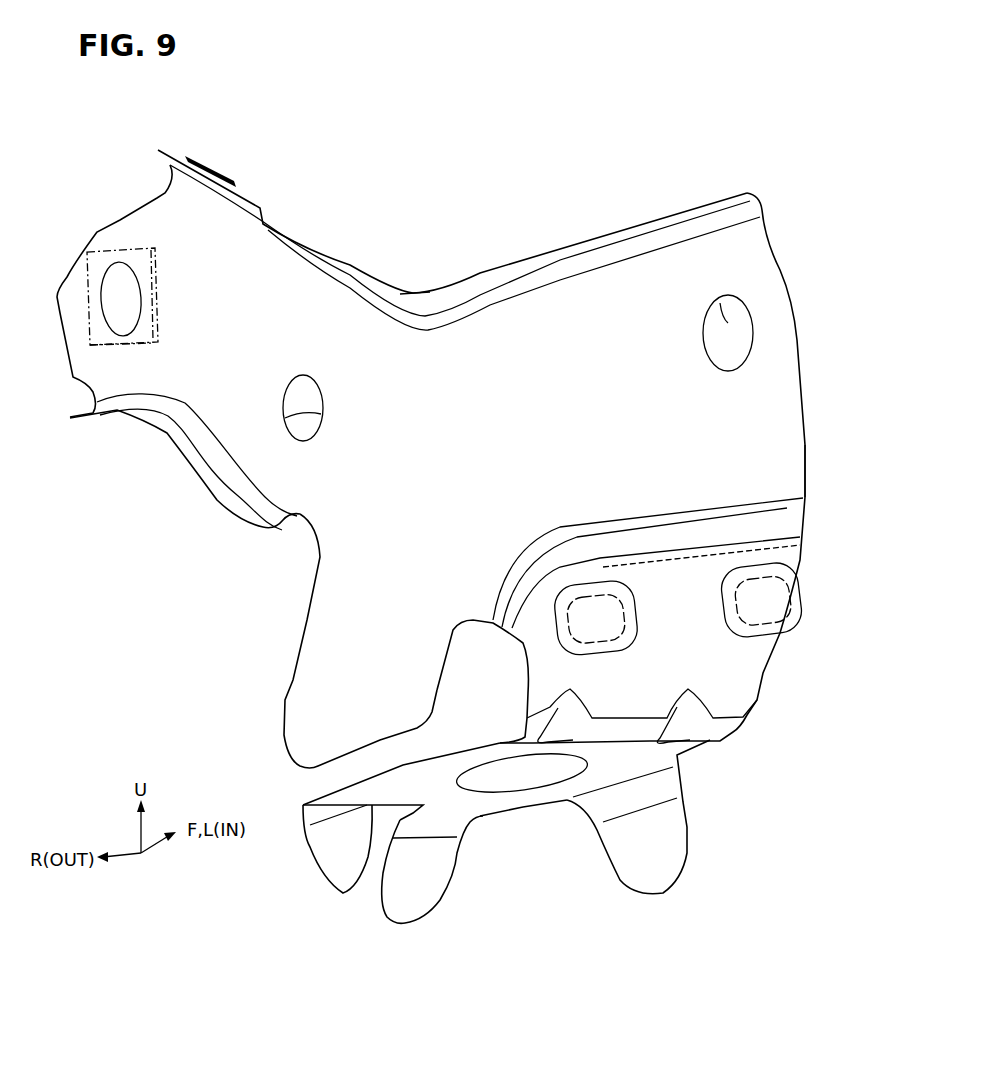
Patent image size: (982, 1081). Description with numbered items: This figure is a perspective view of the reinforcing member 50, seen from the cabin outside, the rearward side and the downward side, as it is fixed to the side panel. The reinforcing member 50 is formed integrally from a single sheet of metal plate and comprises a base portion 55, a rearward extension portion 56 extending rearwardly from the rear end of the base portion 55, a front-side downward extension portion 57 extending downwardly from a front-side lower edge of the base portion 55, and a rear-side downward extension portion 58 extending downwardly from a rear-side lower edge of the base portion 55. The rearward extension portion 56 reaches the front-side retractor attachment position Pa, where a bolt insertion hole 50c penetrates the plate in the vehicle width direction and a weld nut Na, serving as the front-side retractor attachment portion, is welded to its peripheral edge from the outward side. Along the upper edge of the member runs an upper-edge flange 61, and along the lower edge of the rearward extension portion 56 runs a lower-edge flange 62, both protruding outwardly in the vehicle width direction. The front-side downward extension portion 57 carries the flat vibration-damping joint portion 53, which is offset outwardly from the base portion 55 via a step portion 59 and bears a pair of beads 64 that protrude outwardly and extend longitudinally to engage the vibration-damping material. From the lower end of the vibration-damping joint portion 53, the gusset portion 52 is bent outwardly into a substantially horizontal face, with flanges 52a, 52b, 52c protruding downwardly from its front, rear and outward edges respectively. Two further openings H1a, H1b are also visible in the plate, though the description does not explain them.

The reinforcing member 50 is at (412, 164).
The bolt insertion hole 50c is at (122, 268).
The front-side retractor attachment position Pa is at (170, 305).
The weld nut Na is at (140, 347).
The upper hole H1a is at (728, 323).
The lower hole H1b is at (322, 414).
The rearward extension portion 56 is at (297, 287).
The upper-edge flange 61 is at (415, 293).
The lower-edge flange 62 is at (193, 468).
The rear-side downward extension portion 58 is at (300, 697).
The base portion 55 is at (801, 466).
The step portion 59 is at (793, 522).
The beads 64 is at (637, 615).
The vibration-damping joint portion 53 is at (737, 673).
The front-side downward extension portion 57 is at (751, 736).
The gusset portion 52 is at (513, 813).
The flange 52a is at (663, 862).
The flange 52b is at (323, 862).
The flange 52c is at (410, 893).